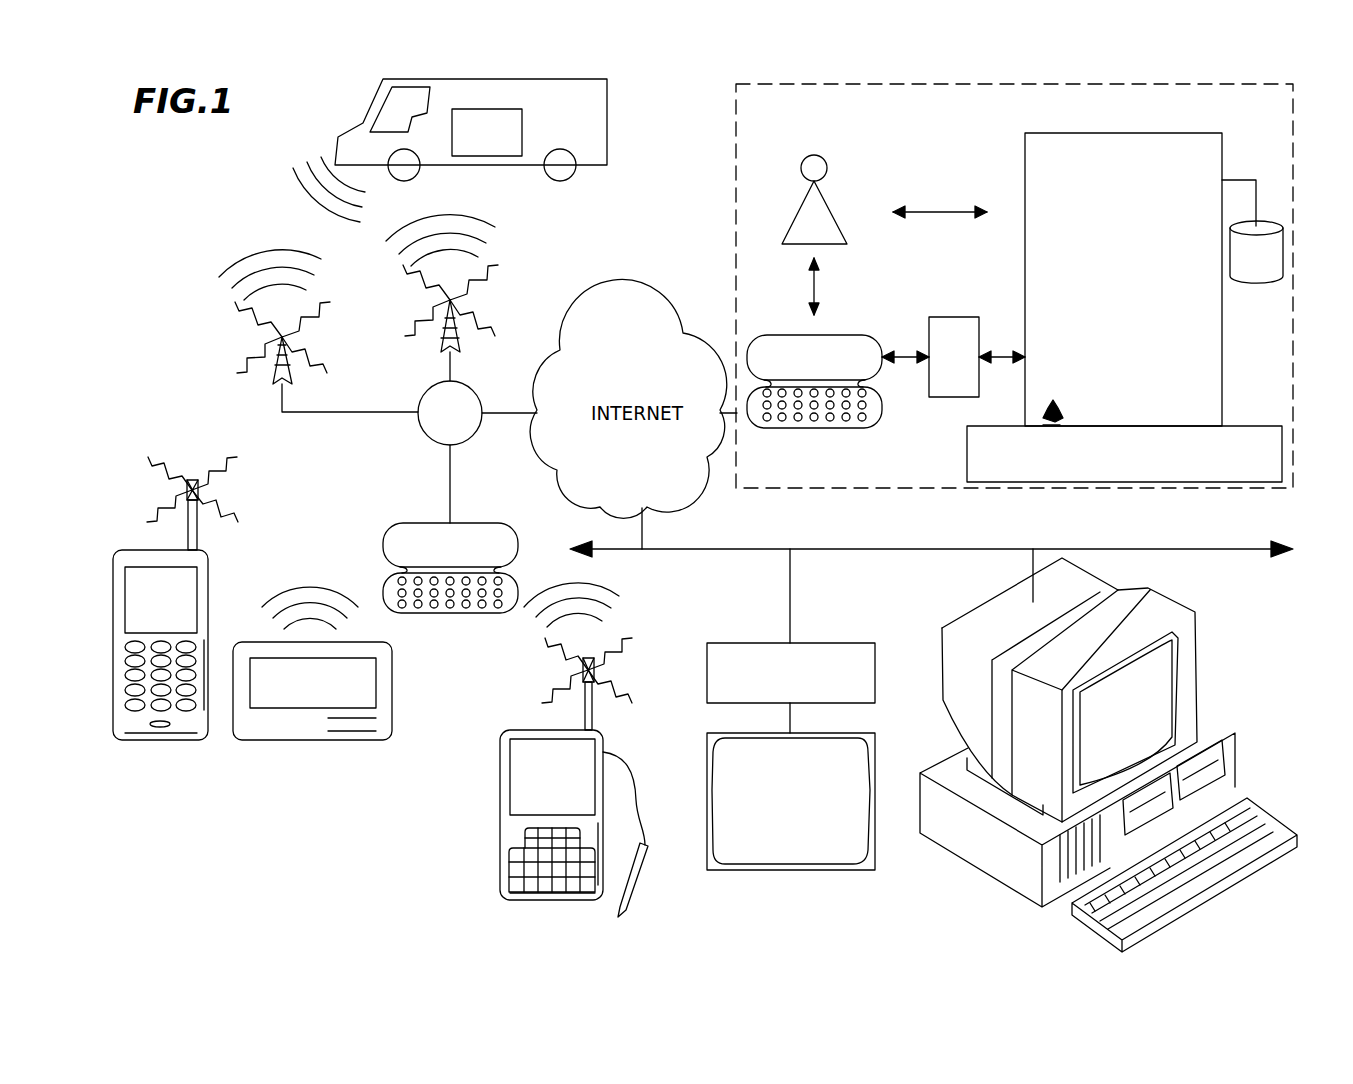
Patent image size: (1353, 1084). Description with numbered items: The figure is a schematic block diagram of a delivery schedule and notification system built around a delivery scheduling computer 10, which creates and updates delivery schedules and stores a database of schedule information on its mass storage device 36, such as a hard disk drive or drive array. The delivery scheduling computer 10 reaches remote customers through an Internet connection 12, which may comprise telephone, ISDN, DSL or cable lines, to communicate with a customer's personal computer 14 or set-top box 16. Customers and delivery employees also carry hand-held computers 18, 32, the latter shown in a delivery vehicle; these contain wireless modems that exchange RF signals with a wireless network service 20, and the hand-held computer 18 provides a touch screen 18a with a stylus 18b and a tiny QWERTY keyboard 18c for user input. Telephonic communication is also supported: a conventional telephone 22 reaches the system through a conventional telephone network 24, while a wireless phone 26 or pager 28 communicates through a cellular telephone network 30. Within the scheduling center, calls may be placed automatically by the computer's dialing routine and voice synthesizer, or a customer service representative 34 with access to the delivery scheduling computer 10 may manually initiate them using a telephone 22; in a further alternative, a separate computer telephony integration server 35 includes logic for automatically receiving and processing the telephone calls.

The delivery scheduling computer 10 is at (1182, 133).
The Internet connection 12 is at (1130, 549).
The personal computer 14 is at (1197, 675).
The set-top box 16 is at (810, 643).
The hand-held computer 18 is at (582, 759).
The touch screen 18a is at (513, 773).
The stylus 18b is at (636, 888).
The QWERTY keyboard 18c is at (572, 884).
The wireless network service 20 is at (445, 342).
The conventional telephone 22 is at (466, 523).
The conventional telephone network 24 is at (470, 388).
The wireless phone 26 is at (208, 568).
The pager 28 is at (392, 684).
The cellular telephone network 30 is at (276, 381).
The hand-held computer 32 is at (522, 128).
The customer service representative 34 is at (818, 156).
The computer telephony integration (CTI) server 35 is at (940, 317).
The mass storage device 36 is at (1268, 283).